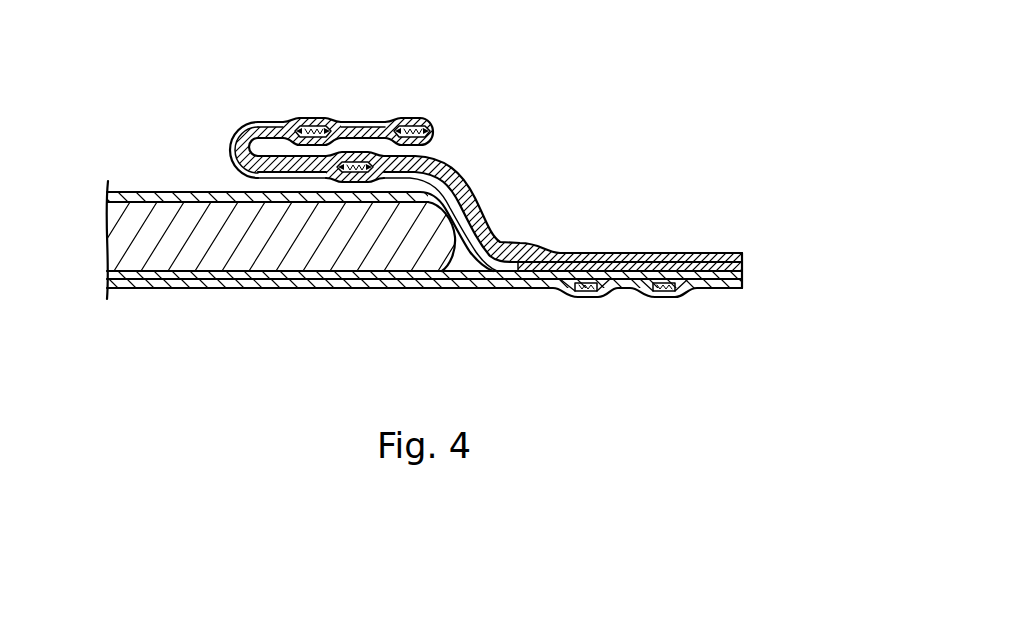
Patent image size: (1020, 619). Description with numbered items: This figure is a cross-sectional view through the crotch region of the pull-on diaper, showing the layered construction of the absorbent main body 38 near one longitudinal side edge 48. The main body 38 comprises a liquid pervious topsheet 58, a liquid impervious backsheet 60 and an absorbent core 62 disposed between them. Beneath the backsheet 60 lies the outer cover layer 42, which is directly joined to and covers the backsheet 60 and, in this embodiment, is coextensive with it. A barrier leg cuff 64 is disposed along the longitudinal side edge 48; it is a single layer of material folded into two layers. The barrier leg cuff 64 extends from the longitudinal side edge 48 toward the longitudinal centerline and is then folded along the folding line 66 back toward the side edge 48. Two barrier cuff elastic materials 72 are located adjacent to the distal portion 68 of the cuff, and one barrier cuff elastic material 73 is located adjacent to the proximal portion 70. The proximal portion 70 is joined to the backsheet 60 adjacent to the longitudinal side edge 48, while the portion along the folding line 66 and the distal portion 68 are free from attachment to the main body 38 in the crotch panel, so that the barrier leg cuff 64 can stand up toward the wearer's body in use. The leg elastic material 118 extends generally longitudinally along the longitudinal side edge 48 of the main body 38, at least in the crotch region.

The absorbent main body 38 is at (600, 147).
The outer cover layer 42 is at (470, 289).
The longitudinal side edge 48 is at (742, 257).
The liquid pervious topsheet 58 is at (148, 195).
The liquid impervious backsheet 60 is at (115, 272).
The absorbent core 62 is at (120, 237).
The barrier leg cuff 64 is at (308, 119).
The folding line 66 is at (232, 152).
The distal portion 68 is at (437, 132).
The proximal portion 70 is at (602, 252).
The barrier cuff elastic materials 72 is at (317, 120).
The barrier cuff elastic material 73 is at (353, 157).
The leg elastic material 118 is at (660, 298).